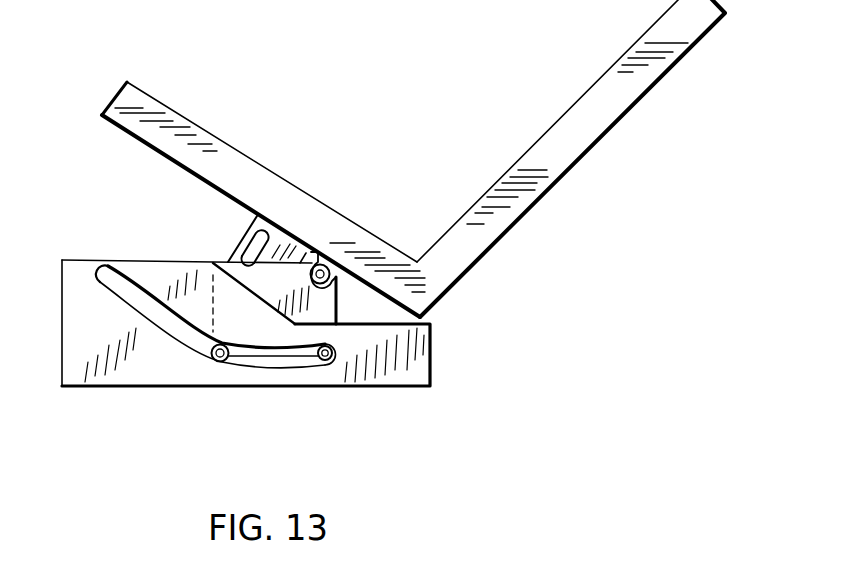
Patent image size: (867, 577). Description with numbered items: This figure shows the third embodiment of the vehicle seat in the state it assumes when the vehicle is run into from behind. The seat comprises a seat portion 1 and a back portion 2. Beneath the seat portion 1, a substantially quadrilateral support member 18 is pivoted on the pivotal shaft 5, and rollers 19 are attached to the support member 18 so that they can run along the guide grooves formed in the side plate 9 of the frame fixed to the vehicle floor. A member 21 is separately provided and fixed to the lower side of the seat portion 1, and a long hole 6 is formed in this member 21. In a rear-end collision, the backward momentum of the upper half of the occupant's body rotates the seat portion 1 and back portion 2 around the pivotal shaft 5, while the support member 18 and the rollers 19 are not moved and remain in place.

The seat portion 1 is at (153, 107).
The back portion 2 is at (615, 95).
The pivotal shaft 5 is at (325, 267).
The long hole 6 is at (290, 245).
The side plate 9 is at (73, 338).
The support member 18 is at (327, 298).
The roller 19 is at (317, 367).
The member 21 is at (245, 231).